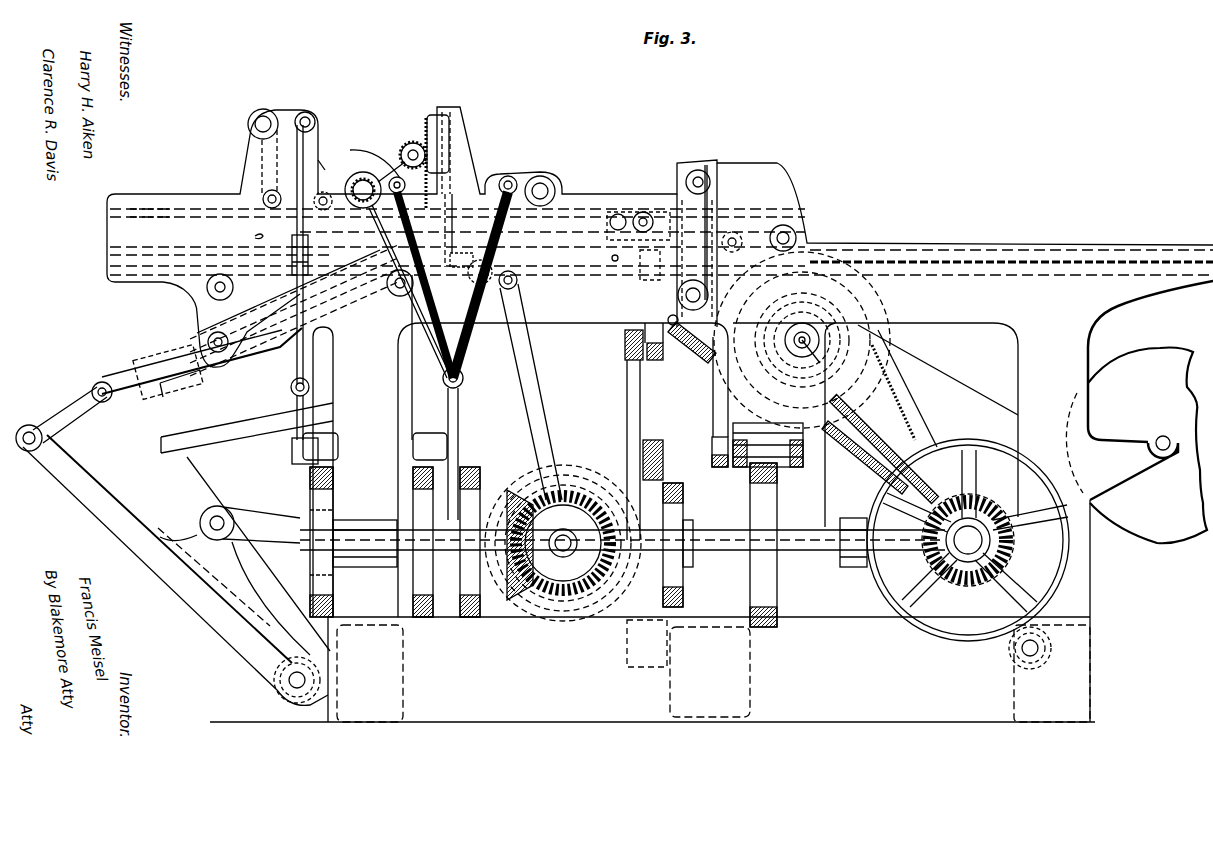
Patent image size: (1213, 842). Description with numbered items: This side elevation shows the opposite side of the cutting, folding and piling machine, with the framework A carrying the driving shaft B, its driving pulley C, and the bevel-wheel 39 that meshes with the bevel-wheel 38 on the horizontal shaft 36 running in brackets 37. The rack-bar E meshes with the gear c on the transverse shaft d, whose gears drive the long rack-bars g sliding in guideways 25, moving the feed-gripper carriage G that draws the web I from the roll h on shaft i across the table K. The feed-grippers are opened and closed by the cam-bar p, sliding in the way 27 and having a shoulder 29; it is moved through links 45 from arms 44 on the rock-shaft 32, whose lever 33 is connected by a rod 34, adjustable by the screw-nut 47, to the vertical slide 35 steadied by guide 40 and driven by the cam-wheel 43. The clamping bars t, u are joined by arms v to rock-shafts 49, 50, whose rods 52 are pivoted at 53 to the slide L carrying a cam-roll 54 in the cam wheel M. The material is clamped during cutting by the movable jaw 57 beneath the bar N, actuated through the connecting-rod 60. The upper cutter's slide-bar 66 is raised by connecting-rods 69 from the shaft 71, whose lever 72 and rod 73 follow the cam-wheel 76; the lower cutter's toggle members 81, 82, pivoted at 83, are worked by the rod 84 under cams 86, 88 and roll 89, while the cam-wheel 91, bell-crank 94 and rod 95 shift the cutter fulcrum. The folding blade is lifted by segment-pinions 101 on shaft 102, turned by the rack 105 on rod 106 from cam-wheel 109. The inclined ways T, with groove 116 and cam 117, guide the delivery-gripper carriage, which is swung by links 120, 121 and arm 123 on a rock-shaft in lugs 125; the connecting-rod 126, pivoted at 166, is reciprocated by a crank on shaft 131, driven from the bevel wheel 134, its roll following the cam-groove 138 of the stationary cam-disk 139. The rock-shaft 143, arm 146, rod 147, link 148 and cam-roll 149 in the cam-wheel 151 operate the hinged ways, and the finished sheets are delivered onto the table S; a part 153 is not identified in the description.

The longitudinal grooves or guideways 25 is at (113, 266).
The horizontal guide-groove or way 27 is at (115, 217).
The cam or shoulder 29 is at (175, 213).
The cam-bar p is at (185, 213).
The table K is at (255, 237).
The rack-bars g is at (870, 250).
The framework A is at (957, 295).
The arms or levers 44 is at (262, 152).
The rock-shaft 32 is at (265, 110).
The lever 33 is at (292, 112).
The right and left screw-nut 47 is at (297, 250).
The connecting rod 34 is at (315, 170).
The links 45 is at (325, 193).
The rock-shaft 50 is at (360, 176).
The arms v is at (430, 158).
The clamping bar u is at (392, 176).
The clamping bar t is at (485, 183).
The transverse shaft 102 is at (405, 150).
The segment-pinions 101 is at (430, 137).
The rack 105 is at (437, 125).
The lower or movable clamping jaw 57 is at (512, 178).
The rock-shaft 49 is at (545, 178).
The feed-gripper carriage G is at (618, 212).
The short connecting-rods 69 is at (697, 210).
The transverse slide-bar 66 is at (705, 168).
The transverse bar N is at (722, 190).
The transverse shaft d is at (798, 330).
The gear c is at (890, 388).
The web I is at (960, 372).
The rack-bar E is at (895, 405).
The connecting-rod 60 is at (883, 413).
The connecting-rod 73 is at (848, 456).
The rod 106 is at (398, 352).
The pivot 83 is at (640, 660).
The roll h is at (1139, 412).
The shaft i is at (1163, 436).
The driving pulley C is at (1067, 568).
The driving shaft B is at (1010, 541).
The bevel-wheel 39 is at (1005, 560).
The cam-wheel 76 is at (985, 480).
The bevel-wheel 38 is at (900, 596).
The horizontal shaft 36 is at (830, 552).
The brackets 37 is at (372, 520).
The connecting-rod 126 is at (290, 525).
The cam-wheel 43 is at (333, 490).
The cam-wheel 109 is at (440, 620).
The cam-roll 54 is at (472, 480).
The cam wheel M is at (478, 480).
The link 148 is at (520, 500).
The cam-roll 149 is at (577, 500).
The cam-groove 138 is at (575, 465).
The stationary cam-disk 139 is at (600, 465).
The cam-wheel 151 is at (590, 505).
The gear 153 is at (560, 590).
The bevel wheel 134 is at (520, 590).
The shaft 131 is at (540, 590).
The cam 86 is at (613, 603).
The cam 88 is at (684, 497).
The cam-roll 89 is at (684, 576).
The bell-crank lever 94 is at (690, 540).
The cam-wheel 91 is at (778, 503).
The connecting-rod 84 is at (664, 460).
The lower toggle member 82 is at (628, 403).
The upper toggle member 81 is at (668, 382).
The arm or lever 72 is at (672, 330).
The shaft 71 is at (690, 345).
The connecting-rod 95 is at (712, 394).
The rock-shaft 143 is at (440, 285).
The lever or arm 146 is at (478, 300).
The rods 52 is at (450, 345).
The pivot 53 is at (463, 378).
The connecting-rod 147 is at (530, 362).
The vertical slide L is at (460, 420).
The link 120 is at (431, 446).
The guide 40 is at (340, 448).
The vertical slide 35 is at (293, 460).
The inclined ways or guide-bars T is at (250, 319).
The cam or inclined portion 117 is at (200, 379).
The longitudinal groove 116 is at (265, 352).
The link 121 is at (60, 430).
The arm 123 is at (160, 530).
The lugs 125 is at (308, 710).
The table S is at (267, 425).
The pivot 166 is at (216, 521).